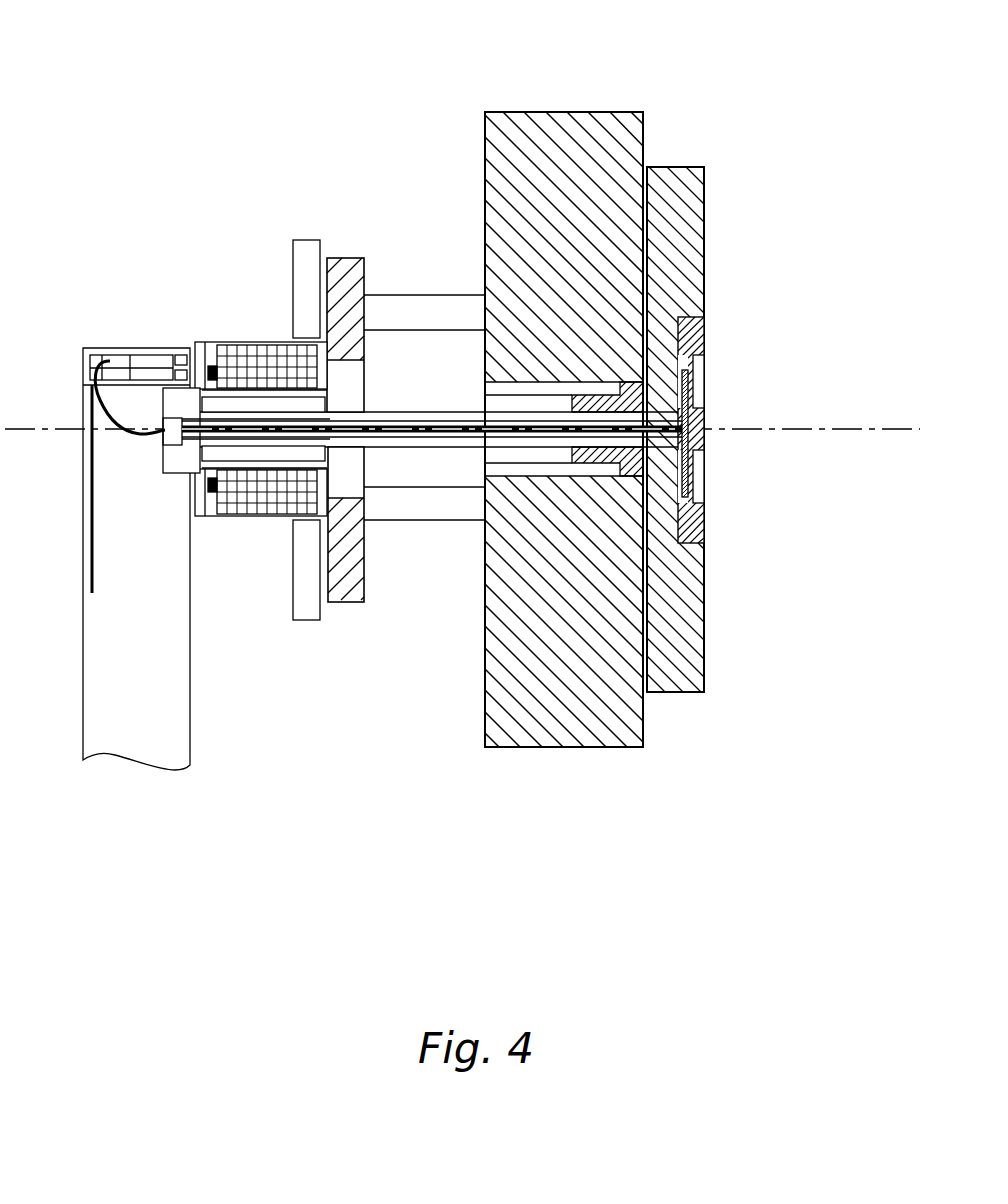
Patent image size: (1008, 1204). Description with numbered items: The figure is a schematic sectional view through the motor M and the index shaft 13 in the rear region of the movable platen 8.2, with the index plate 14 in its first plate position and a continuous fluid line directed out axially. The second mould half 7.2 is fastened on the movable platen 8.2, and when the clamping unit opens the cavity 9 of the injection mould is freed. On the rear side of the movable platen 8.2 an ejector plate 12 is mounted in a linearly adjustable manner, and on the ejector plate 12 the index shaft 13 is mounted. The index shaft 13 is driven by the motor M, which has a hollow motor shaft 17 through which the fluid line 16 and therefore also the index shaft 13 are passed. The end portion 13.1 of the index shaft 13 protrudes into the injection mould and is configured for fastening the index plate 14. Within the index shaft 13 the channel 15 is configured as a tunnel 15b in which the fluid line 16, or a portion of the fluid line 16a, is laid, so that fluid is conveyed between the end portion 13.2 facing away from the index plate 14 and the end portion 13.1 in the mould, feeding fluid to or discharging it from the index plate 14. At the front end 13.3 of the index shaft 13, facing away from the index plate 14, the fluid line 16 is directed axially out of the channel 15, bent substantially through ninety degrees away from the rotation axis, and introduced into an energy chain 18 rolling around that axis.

The second mould half 7.2 is at (680, 172).
The movable platen 8.2 is at (555, 113).
The cavity 9 is at (697, 384).
The ejector plate 12 is at (347, 262).
The index shaft 13 is at (421, 412).
The end portion of the index shaft 13.1 is at (697, 470).
The end portion of the index shaft 13.2 is at (188, 473).
The front end of the index shaft 13.3 is at (160, 460).
The index plate 14 is at (697, 520).
The channel 15 is at (228, 440).
The tunnel 15b is at (256, 543).
The fluid line 16 is at (120, 417).
The portion of the fluid line 16a is at (417, 436).
The hollow motor shaft 17 is at (273, 407).
The energy chain 18 is at (120, 357).
The motor M is at (247, 350).